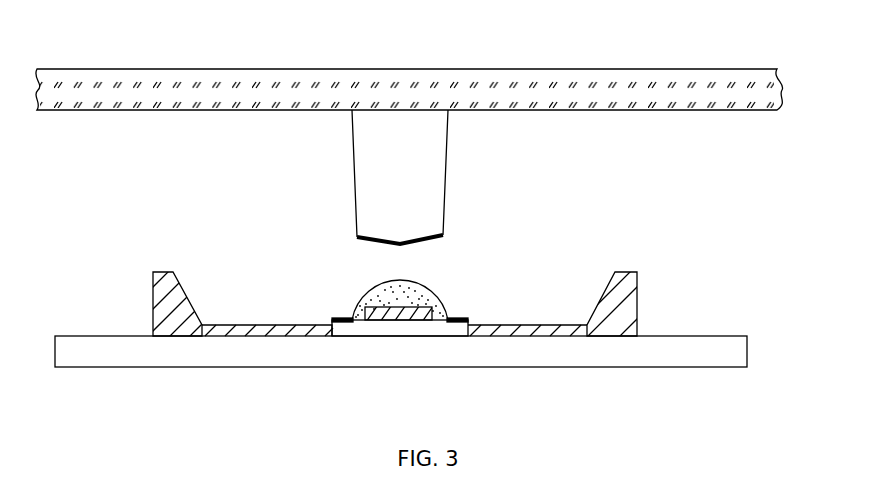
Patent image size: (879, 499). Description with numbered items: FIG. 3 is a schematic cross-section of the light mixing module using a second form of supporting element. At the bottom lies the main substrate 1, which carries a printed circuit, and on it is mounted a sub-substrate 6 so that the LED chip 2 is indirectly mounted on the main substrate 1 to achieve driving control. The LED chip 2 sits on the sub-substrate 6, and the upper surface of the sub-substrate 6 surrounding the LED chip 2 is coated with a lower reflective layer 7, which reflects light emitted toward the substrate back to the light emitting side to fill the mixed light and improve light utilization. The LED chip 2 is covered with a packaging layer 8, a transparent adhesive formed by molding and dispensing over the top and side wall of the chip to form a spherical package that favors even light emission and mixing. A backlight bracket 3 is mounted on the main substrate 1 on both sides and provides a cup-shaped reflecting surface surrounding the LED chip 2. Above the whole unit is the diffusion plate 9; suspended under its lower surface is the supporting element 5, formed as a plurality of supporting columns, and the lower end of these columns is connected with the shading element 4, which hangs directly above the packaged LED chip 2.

The main substrate 1 is at (165, 358).
The LED chip 2 is at (408, 310).
The backlight bracket 3 is at (598, 330).
The shading element 4 is at (378, 240).
The supporting element 5 is at (406, 172).
The sub-substrate 6 is at (380, 330).
The lower reflective layer 7 is at (453, 322).
The packaging layer 8 is at (367, 316).
The diffusion plate 9 is at (112, 85).